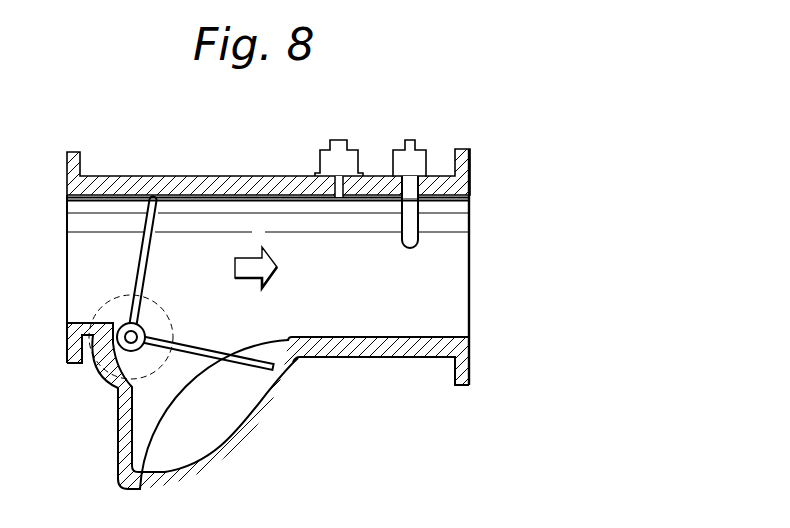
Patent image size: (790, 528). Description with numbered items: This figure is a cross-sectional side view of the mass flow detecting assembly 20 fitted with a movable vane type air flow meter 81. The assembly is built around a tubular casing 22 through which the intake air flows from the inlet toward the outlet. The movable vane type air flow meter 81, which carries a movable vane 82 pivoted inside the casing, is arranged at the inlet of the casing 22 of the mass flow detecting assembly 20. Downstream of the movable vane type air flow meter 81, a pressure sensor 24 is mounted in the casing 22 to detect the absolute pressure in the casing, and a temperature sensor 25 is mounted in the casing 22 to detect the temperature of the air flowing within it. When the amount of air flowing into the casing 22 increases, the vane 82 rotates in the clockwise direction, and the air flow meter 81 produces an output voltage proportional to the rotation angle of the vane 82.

The mass flow detecting assembly 20 is at (460, 141).
The tubular casing 22 is at (375, 350).
The pressure sensor 24 is at (338, 140).
The temperature sensor 25 is at (406, 140).
The movable vane type air flow meter 81 is at (105, 426).
The movable vane 82 is at (215, 357).